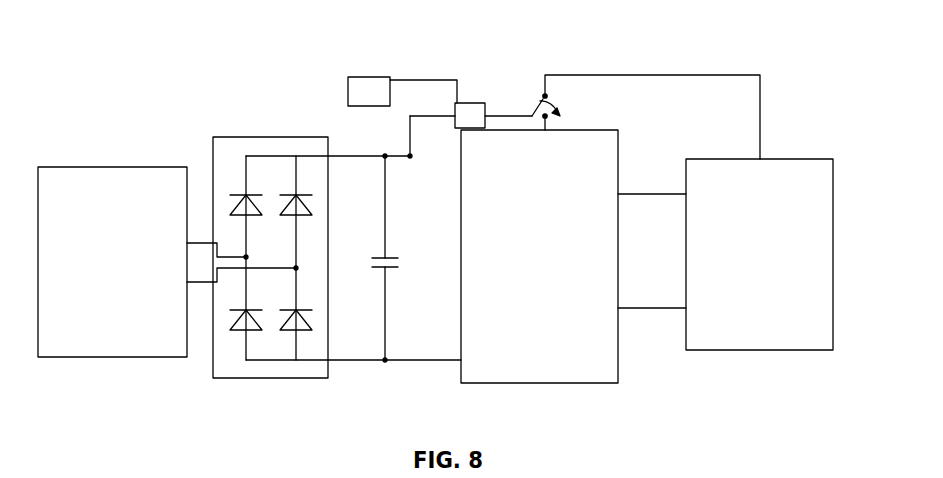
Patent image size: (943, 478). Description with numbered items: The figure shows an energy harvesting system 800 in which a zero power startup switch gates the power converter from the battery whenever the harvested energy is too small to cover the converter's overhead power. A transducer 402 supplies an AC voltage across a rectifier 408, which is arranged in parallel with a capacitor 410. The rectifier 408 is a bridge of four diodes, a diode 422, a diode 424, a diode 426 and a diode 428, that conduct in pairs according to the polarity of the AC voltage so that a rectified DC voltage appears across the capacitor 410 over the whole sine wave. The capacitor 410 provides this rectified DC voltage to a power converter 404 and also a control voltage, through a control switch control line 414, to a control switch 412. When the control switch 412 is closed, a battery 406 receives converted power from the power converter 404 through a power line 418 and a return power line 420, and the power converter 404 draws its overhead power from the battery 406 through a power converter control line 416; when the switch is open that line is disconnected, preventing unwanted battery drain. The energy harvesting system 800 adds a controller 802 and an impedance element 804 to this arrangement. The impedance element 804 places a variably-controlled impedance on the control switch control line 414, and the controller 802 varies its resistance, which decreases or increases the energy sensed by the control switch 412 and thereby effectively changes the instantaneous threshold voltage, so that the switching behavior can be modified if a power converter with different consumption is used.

The energy harvesting system 800 is at (162, 44).
The controller 802 is at (368, 77).
The impedance element 804 is at (465, 102).
The transducer 402 is at (99, 166).
The power converter 404 is at (590, 129).
The battery 406 is at (775, 158).
The rectifier 408 is at (316, 258).
The capacitor 410 is at (380, 270).
The control switch 412 is at (540, 90).
The control switch control line 414 is at (430, 115).
The power converter control line 416 is at (660, 75).
The power line 418 is at (645, 192).
The return power line 420 is at (645, 310).
The diode 422 is at (236, 210).
The diode 424 is at (305, 322).
The diode 426 is at (308, 210).
The diode 428 is at (243, 322).